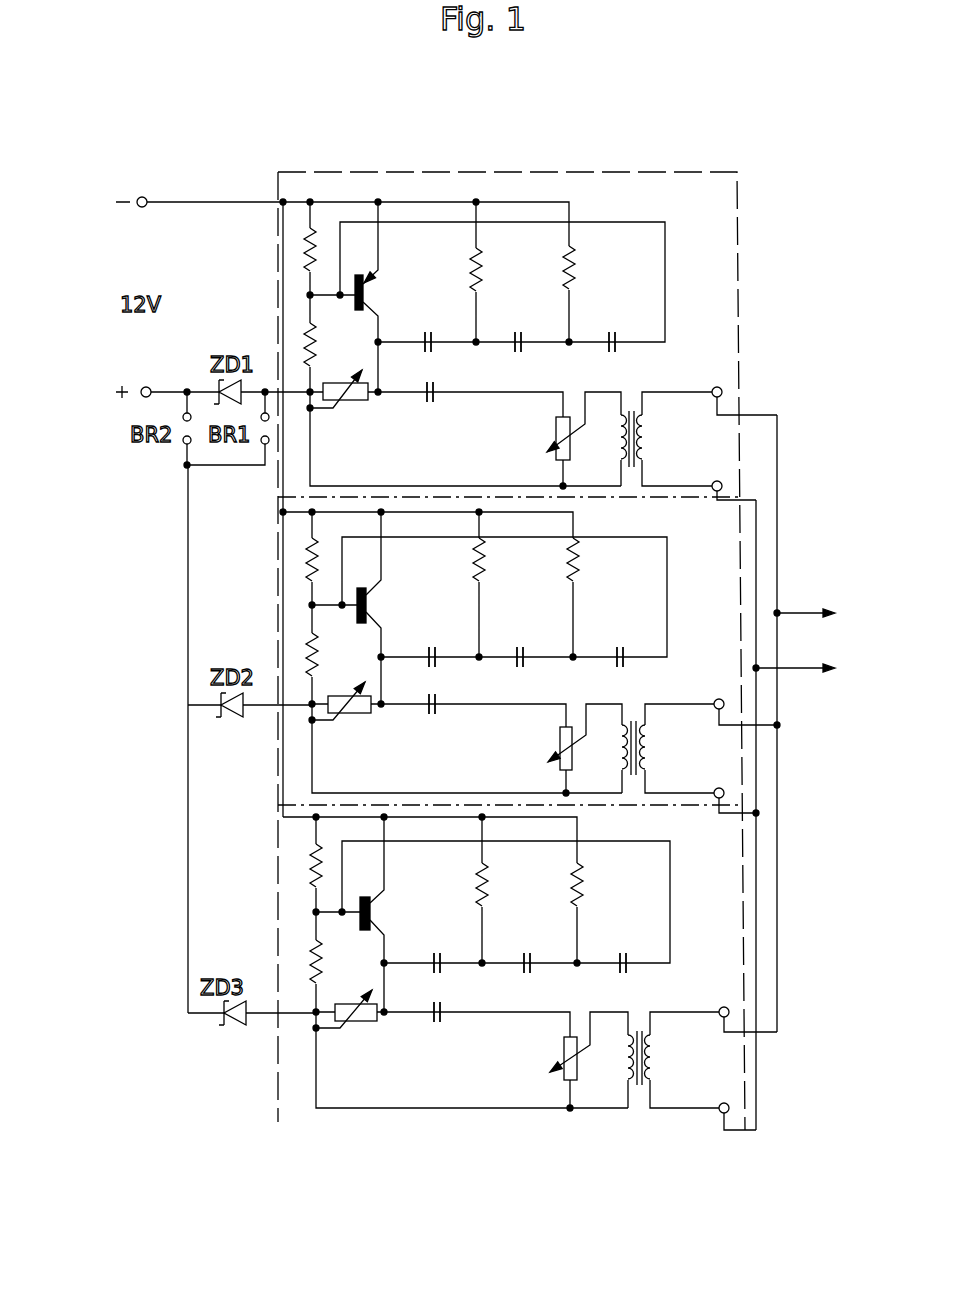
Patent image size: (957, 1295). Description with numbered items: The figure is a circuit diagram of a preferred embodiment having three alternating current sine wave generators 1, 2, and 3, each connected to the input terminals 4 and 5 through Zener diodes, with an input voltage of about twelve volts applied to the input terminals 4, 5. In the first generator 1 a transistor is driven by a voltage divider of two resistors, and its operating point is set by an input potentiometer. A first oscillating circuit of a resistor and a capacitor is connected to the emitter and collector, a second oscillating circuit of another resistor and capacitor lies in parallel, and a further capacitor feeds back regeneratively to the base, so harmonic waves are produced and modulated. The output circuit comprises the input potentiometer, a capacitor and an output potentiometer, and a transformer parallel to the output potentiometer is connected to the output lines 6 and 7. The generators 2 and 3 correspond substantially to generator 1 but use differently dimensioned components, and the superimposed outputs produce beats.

The alternating current sine wave generator 1 is at (722, 336).
The alternating current sine wave generator 2 is at (710, 575).
The alternating current sine wave generator 3 is at (725, 903).
The input terminal 4 is at (146, 197).
The input terminal 5 is at (148, 387).
The output line 6 is at (815, 614).
The output line 7 is at (804, 669).